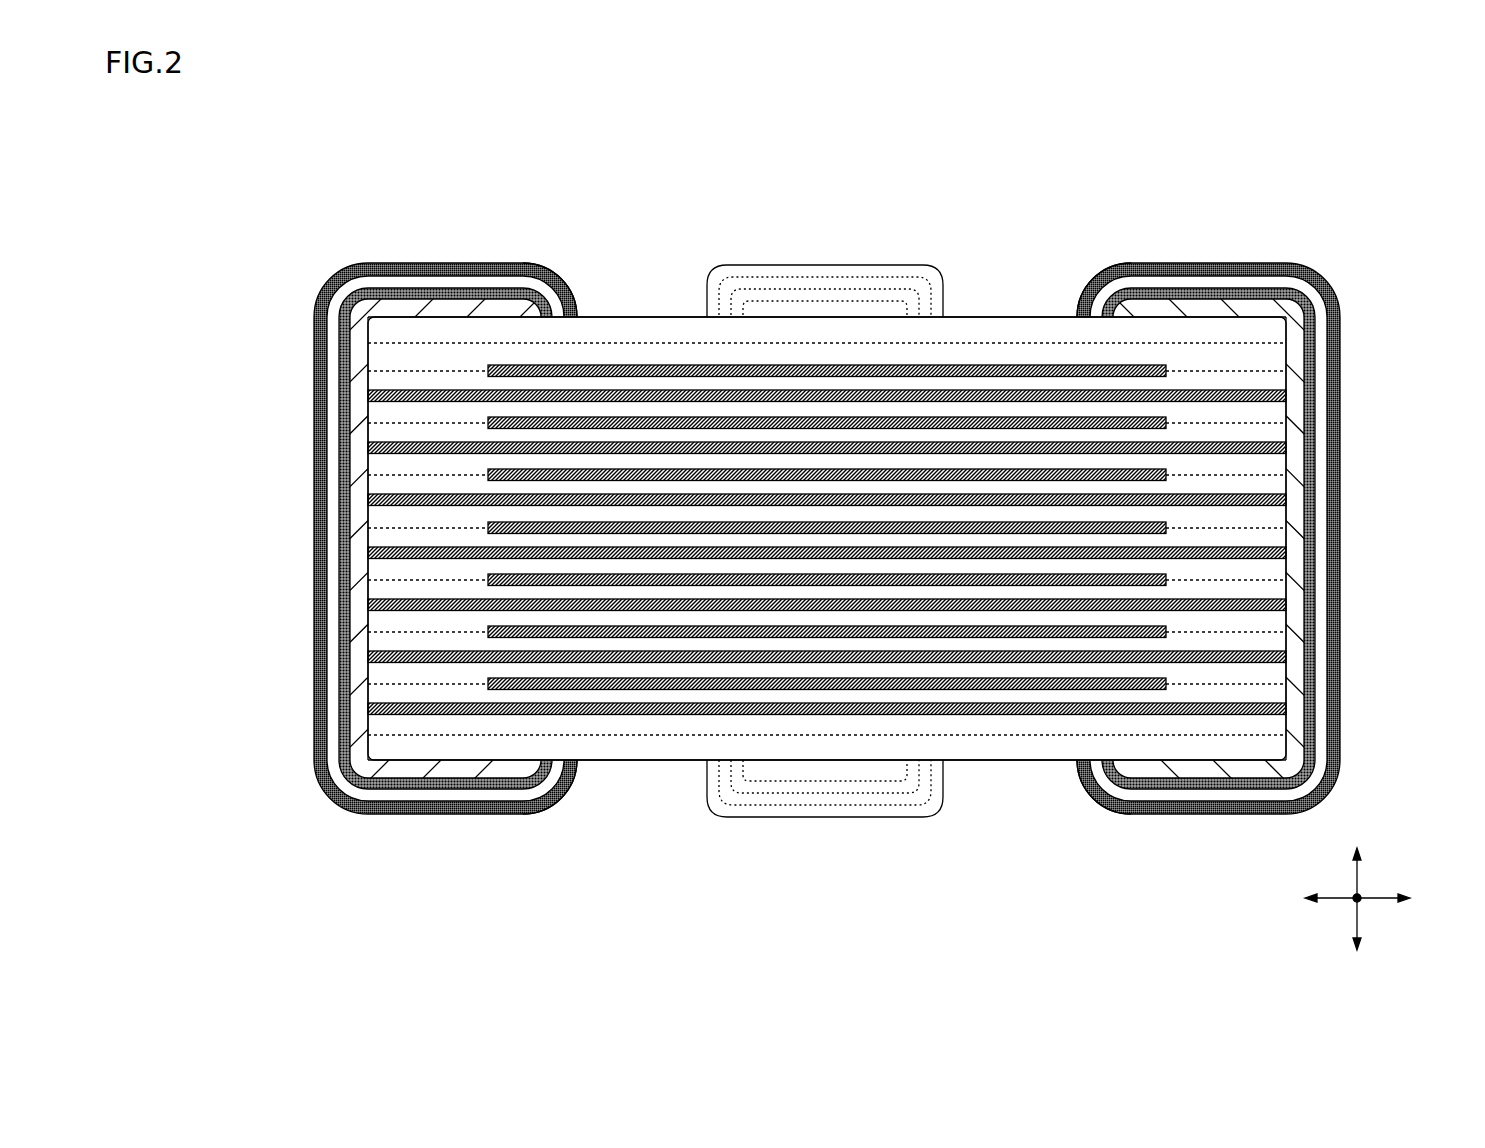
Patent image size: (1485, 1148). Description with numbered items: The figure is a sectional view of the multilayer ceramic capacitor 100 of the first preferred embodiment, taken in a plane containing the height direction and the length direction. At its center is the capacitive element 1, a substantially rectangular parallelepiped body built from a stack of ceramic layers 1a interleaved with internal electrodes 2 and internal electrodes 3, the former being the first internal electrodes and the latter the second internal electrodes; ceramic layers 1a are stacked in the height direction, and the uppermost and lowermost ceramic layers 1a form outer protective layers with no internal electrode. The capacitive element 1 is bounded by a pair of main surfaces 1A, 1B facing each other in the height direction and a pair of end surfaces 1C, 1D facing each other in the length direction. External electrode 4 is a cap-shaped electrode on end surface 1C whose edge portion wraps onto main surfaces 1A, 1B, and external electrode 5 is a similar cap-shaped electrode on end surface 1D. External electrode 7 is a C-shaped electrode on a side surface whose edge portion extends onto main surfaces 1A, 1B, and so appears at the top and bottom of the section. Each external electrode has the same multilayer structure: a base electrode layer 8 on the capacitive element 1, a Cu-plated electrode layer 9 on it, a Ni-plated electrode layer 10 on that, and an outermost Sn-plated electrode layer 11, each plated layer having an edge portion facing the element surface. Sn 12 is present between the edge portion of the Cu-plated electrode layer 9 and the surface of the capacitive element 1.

The multilayer ceramic capacitor 100 is at (250, 96).
The capacitive element 1 is at (1418, 320).
The ceramic layer 1a is at (891, 544).
The main surface 1A is at (986, 782).
The main surface 1B is at (995, 303).
The end surface 1C is at (300, 338).
The end surface 1D is at (1358, 326).
The internal electrode 2 is at (764, 540).
The internal electrode 3 is at (704, 515).
The external electrode 4 is at (388, 162).
The external electrode 5 is at (1172, 308).
The external electrode 7 is at (775, 308).
The base electrode layer 8 is at (404, 307).
The Cu-plated electrode layer 9 is at (425, 292).
The Ni-plated electrode layer 10 is at (454, 280).
The Sn-plated electrode layer 11 is at (486, 268).
The Sn 12 is at (549, 289).